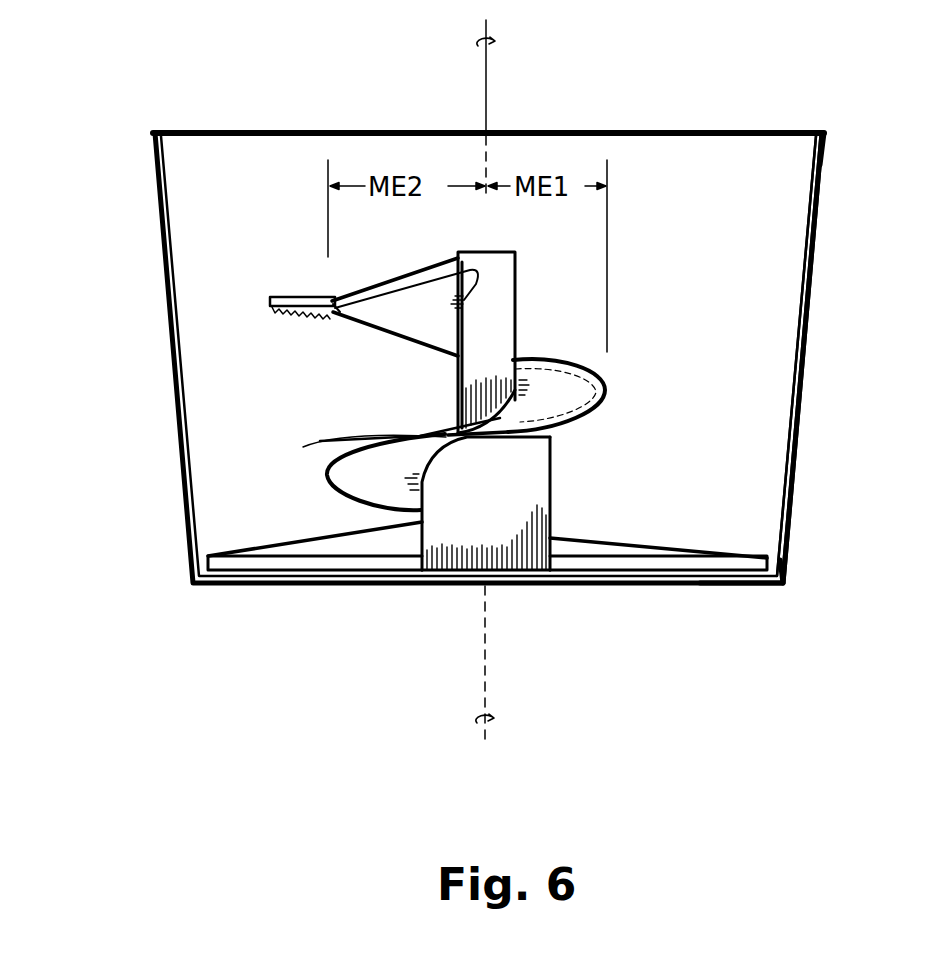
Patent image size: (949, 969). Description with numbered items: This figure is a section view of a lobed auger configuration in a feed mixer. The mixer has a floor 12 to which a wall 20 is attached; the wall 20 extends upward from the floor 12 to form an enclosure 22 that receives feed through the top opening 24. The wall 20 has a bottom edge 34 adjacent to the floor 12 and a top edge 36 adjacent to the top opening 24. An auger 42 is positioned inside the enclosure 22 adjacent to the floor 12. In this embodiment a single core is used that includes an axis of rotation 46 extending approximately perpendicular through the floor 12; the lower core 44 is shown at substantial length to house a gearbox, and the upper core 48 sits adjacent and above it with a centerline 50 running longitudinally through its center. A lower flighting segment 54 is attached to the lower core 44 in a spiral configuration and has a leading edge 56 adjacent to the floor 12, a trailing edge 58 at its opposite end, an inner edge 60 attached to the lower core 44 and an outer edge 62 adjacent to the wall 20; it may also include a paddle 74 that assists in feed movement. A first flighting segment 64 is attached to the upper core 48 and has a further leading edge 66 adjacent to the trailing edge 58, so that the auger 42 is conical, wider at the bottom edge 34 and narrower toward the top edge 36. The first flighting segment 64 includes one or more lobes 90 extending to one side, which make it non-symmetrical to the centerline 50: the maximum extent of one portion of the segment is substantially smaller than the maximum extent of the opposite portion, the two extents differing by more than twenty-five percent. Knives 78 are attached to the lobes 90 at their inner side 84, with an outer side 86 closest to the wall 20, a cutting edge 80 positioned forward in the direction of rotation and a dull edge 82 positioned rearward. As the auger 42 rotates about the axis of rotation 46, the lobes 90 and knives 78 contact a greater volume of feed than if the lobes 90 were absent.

The floor 12 is at (380, 588).
The wall 20 is at (805, 170).
The enclosure 22 is at (797, 233).
The top opening 24 is at (264, 130).
The bottom edge 34 is at (779, 586).
The top edge 36 is at (823, 132).
The auger 42 is at (527, 575).
The lower core 44 is at (445, 575).
The axis of rotation 46 is at (494, 718).
The upper core 48 is at (500, 352).
The centerline 50 is at (497, 41).
The lower flighting segment 54 is at (602, 544).
The leading edge 56 is at (768, 562).
The trailing edge 58 is at (416, 482).
The inner edge 60 is at (330, 552).
The outer edge 62 is at (207, 548).
The first flighting segment 64 is at (600, 389).
The further leading edge 66 is at (512, 418).
The paddle 74 is at (423, 473).
The knives 78 is at (268, 312).
The cutting edge 80 is at (292, 320).
The dull edge 82 is at (290, 297).
The inner side 84 is at (322, 322).
The outer side 86 is at (270, 302).
The lobes 90 is at (342, 440).